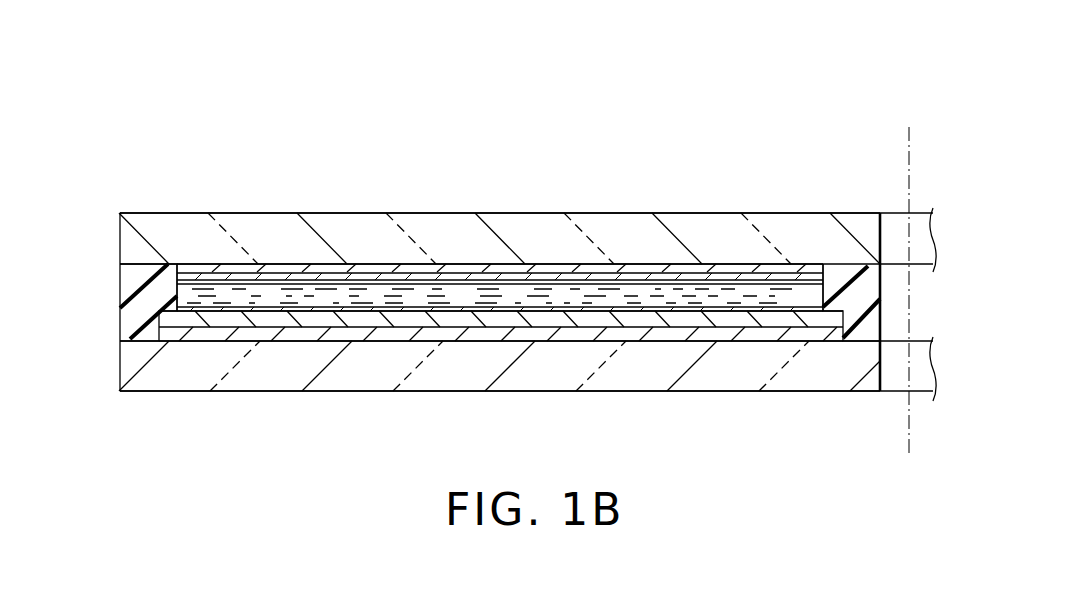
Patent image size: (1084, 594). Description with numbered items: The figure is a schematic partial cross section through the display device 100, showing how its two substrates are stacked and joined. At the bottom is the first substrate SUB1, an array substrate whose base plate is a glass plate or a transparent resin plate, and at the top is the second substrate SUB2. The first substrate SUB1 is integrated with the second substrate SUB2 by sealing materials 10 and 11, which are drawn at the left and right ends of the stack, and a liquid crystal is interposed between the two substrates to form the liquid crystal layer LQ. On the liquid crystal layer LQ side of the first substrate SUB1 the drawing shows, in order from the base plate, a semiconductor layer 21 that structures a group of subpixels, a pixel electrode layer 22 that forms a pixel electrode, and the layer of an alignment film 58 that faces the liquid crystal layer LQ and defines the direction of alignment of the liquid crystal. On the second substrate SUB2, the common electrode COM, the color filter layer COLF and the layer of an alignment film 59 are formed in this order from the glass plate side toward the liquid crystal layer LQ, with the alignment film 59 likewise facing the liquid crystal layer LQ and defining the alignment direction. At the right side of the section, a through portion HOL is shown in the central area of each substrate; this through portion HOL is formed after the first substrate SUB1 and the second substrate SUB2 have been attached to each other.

The display device 100 is at (787, 114).
The through portion HOL is at (897, 230).
The second substrate SUB2 is at (204, 200).
The first substrate SUB1 is at (185, 406).
The sealing material 10 is at (130, 317).
The sealing material 11 is at (836, 262).
The color filter layer COLF is at (414, 278).
The common electrode COM is at (690, 276).
The alignment film 59 is at (553, 283).
The liquid crystal layer LQ is at (610, 300).
The alignment film 58 is at (493, 310).
The pixel electrode layer 22 is at (372, 318).
The semiconductor layer 21 is at (307, 333).